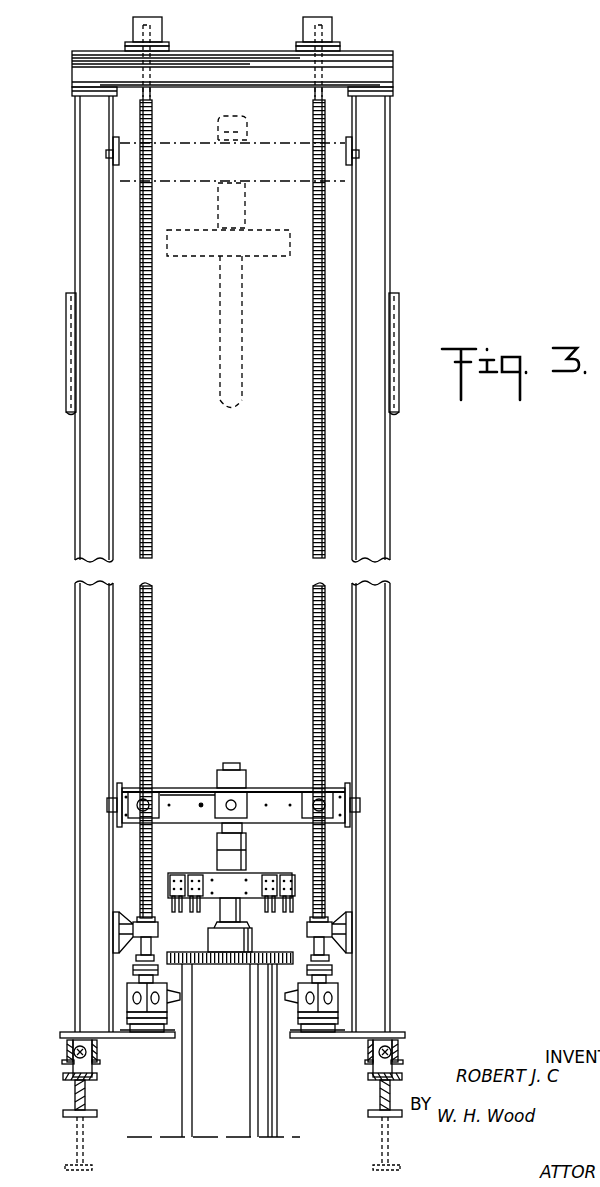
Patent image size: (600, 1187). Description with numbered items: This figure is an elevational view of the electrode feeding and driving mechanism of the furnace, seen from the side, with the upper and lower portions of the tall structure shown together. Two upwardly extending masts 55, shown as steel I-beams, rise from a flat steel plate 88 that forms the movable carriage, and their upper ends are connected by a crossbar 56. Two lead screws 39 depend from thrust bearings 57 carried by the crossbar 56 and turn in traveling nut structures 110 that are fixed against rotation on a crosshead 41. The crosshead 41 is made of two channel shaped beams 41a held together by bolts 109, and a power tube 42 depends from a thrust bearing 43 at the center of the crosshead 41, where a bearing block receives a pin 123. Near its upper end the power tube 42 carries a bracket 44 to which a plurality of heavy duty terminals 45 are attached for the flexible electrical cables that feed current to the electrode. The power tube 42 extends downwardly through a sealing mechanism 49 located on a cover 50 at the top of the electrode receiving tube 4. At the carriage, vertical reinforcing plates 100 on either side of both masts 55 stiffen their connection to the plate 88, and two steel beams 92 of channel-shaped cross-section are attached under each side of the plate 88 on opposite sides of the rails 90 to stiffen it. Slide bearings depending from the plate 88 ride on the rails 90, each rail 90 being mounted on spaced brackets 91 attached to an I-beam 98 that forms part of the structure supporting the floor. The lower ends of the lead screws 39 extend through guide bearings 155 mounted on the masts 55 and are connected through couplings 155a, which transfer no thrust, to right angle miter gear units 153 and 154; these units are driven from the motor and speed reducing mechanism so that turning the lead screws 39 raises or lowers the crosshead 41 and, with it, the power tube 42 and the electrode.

The electrode receiving tube 4 is at (273, 1095).
The lead screws 39 is at (151, 354).
The crosshead 41 is at (263, 783).
The channel shaped beams 41a is at (188, 795).
The power tube 42 is at (228, 910).
The thrust bearing 43 is at (222, 818).
The bracket 44 is at (246, 880).
The heavy duty terminals 45 is at (196, 872).
The sealing mechanism 49 is at (218, 942).
The cover 50 is at (268, 955).
The masts 55 is at (76, 468).
The crossbar 56 is at (230, 70).
The thrust bearings 57 is at (126, 31).
The flat steel plate 88 is at (123, 1040).
The rails 90 is at (72, 1058).
The brackets 91 is at (90, 1068).
The steel beams 92 is at (67, 1048).
The I-beam 98 is at (75, 1095).
The vertical reinforcing plates 100 is at (75, 1003).
The bolts 109 is at (201, 805).
The traveling nut structure 110 is at (158, 800).
The pin 123 is at (233, 762).
The right angle miter gear unit 153 is at (132, 998).
The right angle miter gear unit 154 is at (333, 1000).
The guide bearings 155 is at (158, 928).
The couplings 155a is at (138, 968).